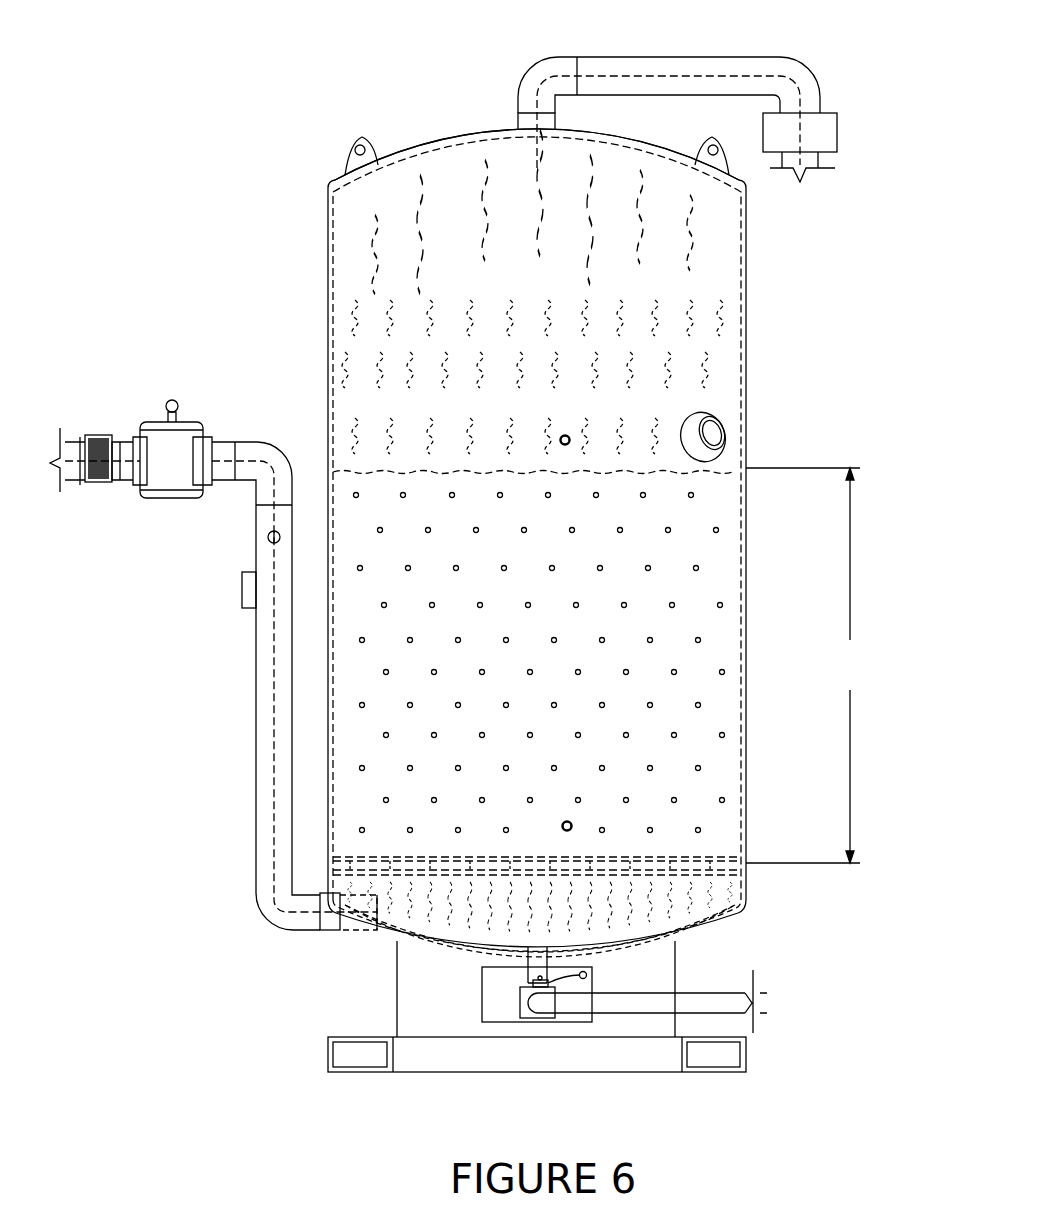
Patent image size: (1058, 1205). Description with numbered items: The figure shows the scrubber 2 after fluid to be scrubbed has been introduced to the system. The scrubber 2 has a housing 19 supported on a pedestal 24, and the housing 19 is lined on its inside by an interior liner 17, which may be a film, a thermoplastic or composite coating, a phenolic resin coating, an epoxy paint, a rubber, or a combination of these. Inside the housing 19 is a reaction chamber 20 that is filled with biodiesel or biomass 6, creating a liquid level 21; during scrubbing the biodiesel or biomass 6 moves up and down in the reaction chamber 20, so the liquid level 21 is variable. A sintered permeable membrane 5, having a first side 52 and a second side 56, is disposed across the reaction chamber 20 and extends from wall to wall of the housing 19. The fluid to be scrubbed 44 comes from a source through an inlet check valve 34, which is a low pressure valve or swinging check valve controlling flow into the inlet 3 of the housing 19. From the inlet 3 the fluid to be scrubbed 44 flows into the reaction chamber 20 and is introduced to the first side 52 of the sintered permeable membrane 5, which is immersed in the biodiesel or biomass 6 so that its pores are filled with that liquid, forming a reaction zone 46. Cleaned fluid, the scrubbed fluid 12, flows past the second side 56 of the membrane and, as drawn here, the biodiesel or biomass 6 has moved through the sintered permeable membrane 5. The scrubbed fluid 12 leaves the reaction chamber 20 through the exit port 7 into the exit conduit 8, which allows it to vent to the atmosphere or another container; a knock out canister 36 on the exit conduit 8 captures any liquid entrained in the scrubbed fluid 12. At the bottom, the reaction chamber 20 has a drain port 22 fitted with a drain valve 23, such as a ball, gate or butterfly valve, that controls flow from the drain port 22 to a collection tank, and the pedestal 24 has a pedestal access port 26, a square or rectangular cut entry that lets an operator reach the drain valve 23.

The scrubber 2 is at (288, 111).
The inlet 3 is at (340, 920).
The sintered permeable membrane 5 is at (733, 866).
The biodiesel or biomass 6 is at (715, 582).
The exit port 7 is at (528, 117).
The exit conduit 8 is at (688, 57).
The scrubbed fluid 12 is at (667, 75).
The interior liner 17 is at (462, 136).
The housing 19 is at (327, 297).
The reaction chamber 20 is at (345, 237).
The liquid level 21 is at (355, 470).
The drain port 22 is at (537, 972).
The drain valve 23 is at (530, 1018).
The pedestal 24 is at (397, 988).
The pedestal access port 26 is at (548, 1020).
The inlet check valve 34 is at (170, 438).
The knock out canister 36 is at (822, 133).
The fluid to be scrubbed 44 is at (273, 687).
The reaction zone 46 is at (806, 665).
The first side 52 is at (728, 873).
The second side 56 is at (730, 858).